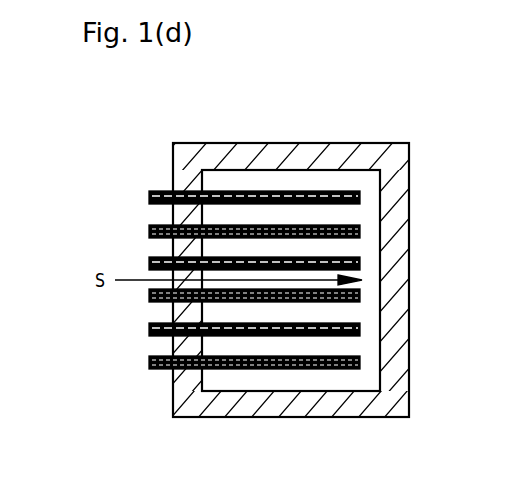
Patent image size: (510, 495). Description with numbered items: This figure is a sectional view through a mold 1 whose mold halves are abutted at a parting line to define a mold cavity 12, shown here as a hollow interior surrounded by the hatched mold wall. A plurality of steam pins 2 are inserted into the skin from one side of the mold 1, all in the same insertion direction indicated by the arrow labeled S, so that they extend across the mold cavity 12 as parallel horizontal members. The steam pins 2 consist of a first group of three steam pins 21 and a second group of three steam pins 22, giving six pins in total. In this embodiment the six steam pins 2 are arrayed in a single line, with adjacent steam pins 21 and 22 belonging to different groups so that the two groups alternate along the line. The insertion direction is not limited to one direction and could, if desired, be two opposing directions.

The mold 1 is at (362, 143).
The mold cavity 12 is at (340, 380).
The steam pins 2 is at (193, 261).
The steam pins of the first group 21 is at (152, 191).
The steam pins of the second group 22 is at (152, 226).